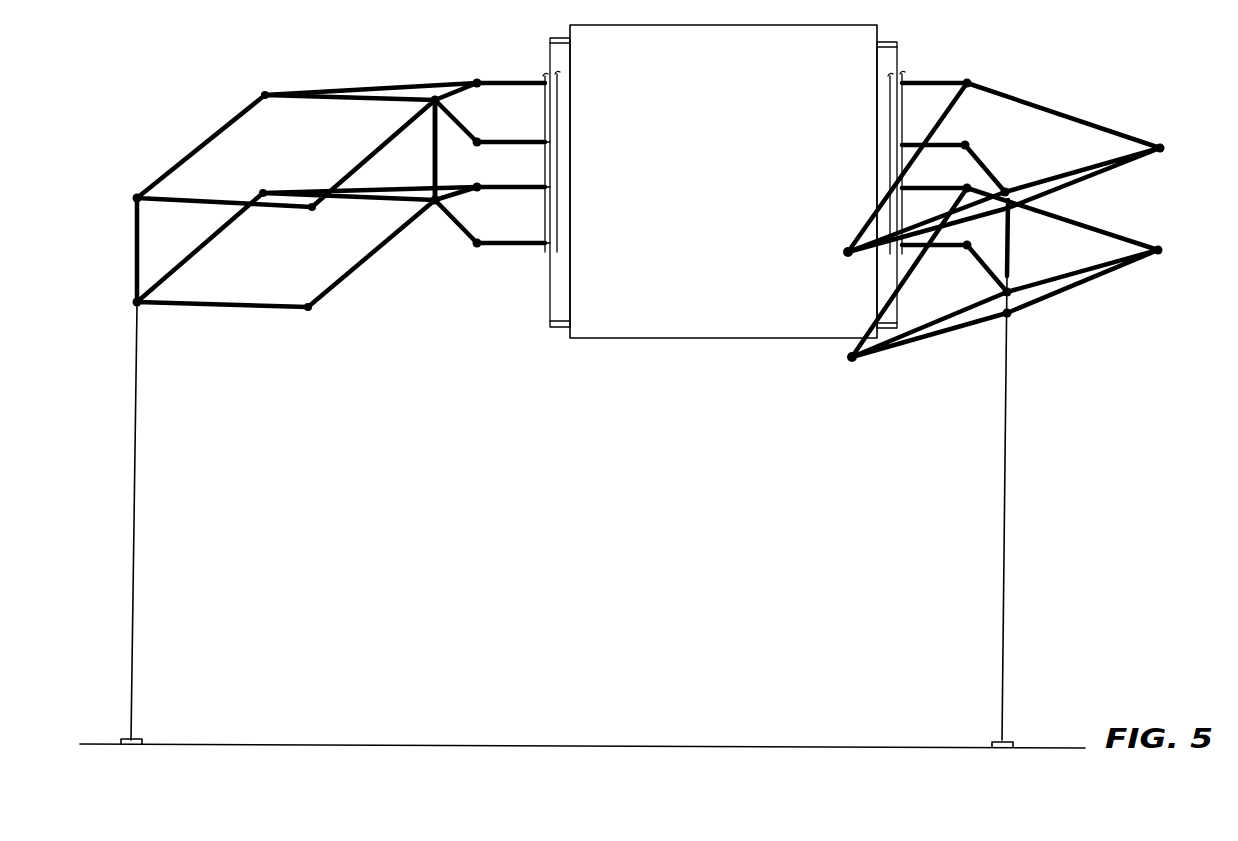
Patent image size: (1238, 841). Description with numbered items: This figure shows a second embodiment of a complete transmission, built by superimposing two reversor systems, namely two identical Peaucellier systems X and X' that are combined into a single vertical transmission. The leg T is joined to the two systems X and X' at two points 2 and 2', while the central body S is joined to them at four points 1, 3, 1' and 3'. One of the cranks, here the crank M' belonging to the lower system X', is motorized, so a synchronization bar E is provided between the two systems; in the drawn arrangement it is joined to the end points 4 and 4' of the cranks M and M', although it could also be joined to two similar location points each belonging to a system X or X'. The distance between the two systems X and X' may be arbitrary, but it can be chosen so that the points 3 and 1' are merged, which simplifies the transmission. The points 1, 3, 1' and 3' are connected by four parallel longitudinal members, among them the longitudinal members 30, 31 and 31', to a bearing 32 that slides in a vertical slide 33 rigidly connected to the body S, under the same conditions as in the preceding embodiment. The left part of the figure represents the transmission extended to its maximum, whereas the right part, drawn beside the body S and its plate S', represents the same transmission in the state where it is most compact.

The point 1 is at (509, 44).
The point 1' is at (509, 171).
The point 2 is at (113, 198).
The point 2' is at (110, 302).
The point 3 is at (509, 120).
The point 3' is at (501, 263).
The end point of crank M 4 is at (371, 61).
The end point of crank M' 4' is at (370, 221).
The longitudinal member 30 is at (511, 81).
The longitudinal member 31 is at (595, 116).
The longitudinal member 31' is at (520, 287).
The bearing 32 is at (550, 204).
The vertical slide 33 is at (553, 60).
The crank M is at (447, 84).
The crank M' is at (447, 237).
The synchronization bar E is at (430, 150).
The Peaucellier system X is at (286, 177).
The Peaucellier system X' is at (703, 253).
The central body S is at (707, 236).
The side plate S' is at (810, 226).
The leg T is at (130, 433).